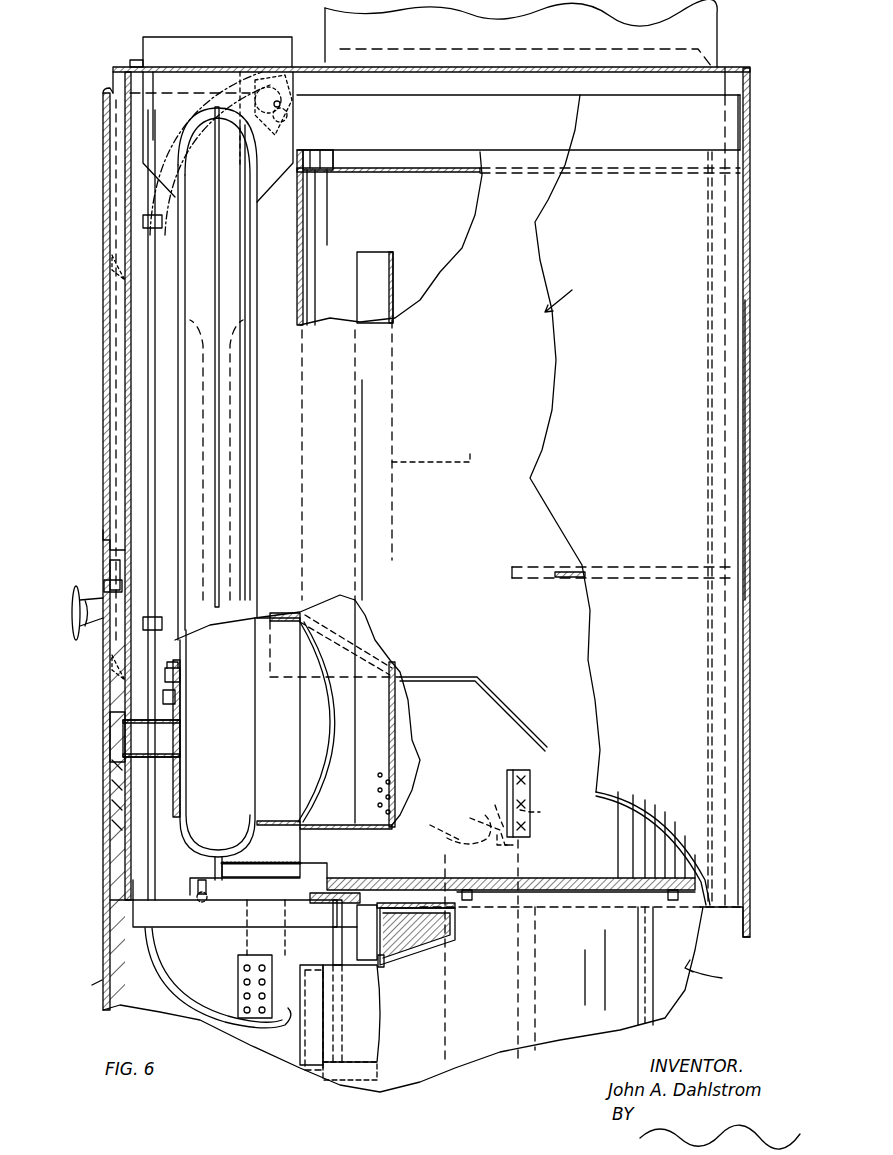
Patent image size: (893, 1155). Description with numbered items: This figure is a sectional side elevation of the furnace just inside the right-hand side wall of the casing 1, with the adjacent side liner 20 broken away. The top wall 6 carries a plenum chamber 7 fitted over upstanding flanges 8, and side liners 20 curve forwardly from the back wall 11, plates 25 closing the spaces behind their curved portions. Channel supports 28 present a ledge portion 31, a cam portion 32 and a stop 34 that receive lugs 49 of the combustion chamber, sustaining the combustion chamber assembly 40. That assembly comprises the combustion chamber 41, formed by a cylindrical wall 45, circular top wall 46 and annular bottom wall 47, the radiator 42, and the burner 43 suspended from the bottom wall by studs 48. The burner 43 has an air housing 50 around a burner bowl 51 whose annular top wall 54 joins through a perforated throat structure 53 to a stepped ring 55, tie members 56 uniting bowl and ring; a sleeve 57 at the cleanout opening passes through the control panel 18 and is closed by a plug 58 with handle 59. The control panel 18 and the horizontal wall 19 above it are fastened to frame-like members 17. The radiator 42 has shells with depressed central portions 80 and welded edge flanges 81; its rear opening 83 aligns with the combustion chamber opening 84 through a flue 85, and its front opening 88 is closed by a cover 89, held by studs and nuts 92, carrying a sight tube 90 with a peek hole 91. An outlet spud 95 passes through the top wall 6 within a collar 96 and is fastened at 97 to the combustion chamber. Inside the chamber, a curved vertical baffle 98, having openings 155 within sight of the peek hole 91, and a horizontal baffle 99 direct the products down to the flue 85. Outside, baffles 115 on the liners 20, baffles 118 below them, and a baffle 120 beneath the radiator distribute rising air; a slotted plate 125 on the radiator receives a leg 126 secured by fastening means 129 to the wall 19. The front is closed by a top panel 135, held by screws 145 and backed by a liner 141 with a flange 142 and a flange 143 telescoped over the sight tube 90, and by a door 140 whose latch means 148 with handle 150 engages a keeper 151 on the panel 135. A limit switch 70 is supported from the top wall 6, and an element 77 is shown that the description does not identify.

The casing 1 is at (755, 362).
The top wall 6 is at (740, 68).
The plenum chamber 7 is at (720, 35).
The upstanding flanges 8 is at (340, 48).
The back wall 11 is at (745, 480).
The frame-like members 17 is at (312, 900).
The control panel 18 is at (333, 943).
The horizontal wall 19 is at (238, 930).
The side liners 20 is at (560, 390).
The plates 25 is at (712, 935).
The supports 28 is at (469, 829).
The ledge portion 31 is at (440, 835).
The cam portion 32 is at (491, 817).
The stop 34 is at (540, 812).
The combustion chamber assembly 40 is at (445, 150).
The combustion chamber 41 is at (497, 273).
The radiator 42 is at (235, 268).
The burner 43 is at (570, 977).
The cylindrical wall 45 is at (297, 238).
The circular top wall 46 is at (333, 155).
The annular bottom wall 47 is at (365, 878).
The studs 48 is at (466, 900).
The lugs 49 is at (530, 785).
The cylindrical air housing 50 is at (640, 1020).
The burner bowl 51 is at (405, 975).
The perforated throat structure 53 is at (438, 893).
The annular top wall 54 is at (432, 960).
The stepped ring 55 is at (383, 893).
The tie members 56 is at (385, 968).
The sleeve 57 is at (342, 1025).
The plug 58 is at (326, 1010).
The handle 59 is at (290, 1030).
The limit switch 70 is at (290, 118).
The motor mount 77 is at (355, 1073).
The depressed central portions 80 is at (228, 458).
The edge flanges 81 is at (215, 497).
The opening 83 is at (255, 775).
The opening 84 is at (323, 718).
The flue 85 is at (300, 625).
The opening 88 is at (178, 790).
The cover 89 is at (180, 692).
The sight tube 90 is at (165, 748).
The peek hole 91 is at (108, 720).
The studs and nuts 92 is at (178, 670).
The outlet spud 95 is at (137, 60).
The collar 96 is at (185, 66).
The fastening 97 is at (292, 170).
The baffle 98 is at (393, 278).
The baffle 99 is at (445, 462).
The baffles 115 is at (575, 580).
The baffles 118 is at (458, 677).
The baffle 120 is at (290, 872).
The slotted plate 125 is at (212, 862).
The leg 126 is at (222, 884).
The fastening means 129 is at (200, 889).
The top panel 135 is at (104, 355).
The door 140 is at (104, 830).
The liner 141 is at (104, 430).
The inwardly directed flange 142 is at (110, 945).
The flange 143 is at (110, 778).
The screws 145 is at (104, 286).
The latch means 148 is at (108, 572).
The handle 150 is at (72, 600).
The keeper 151 is at (108, 548).
The openings 155 is at (398, 780).